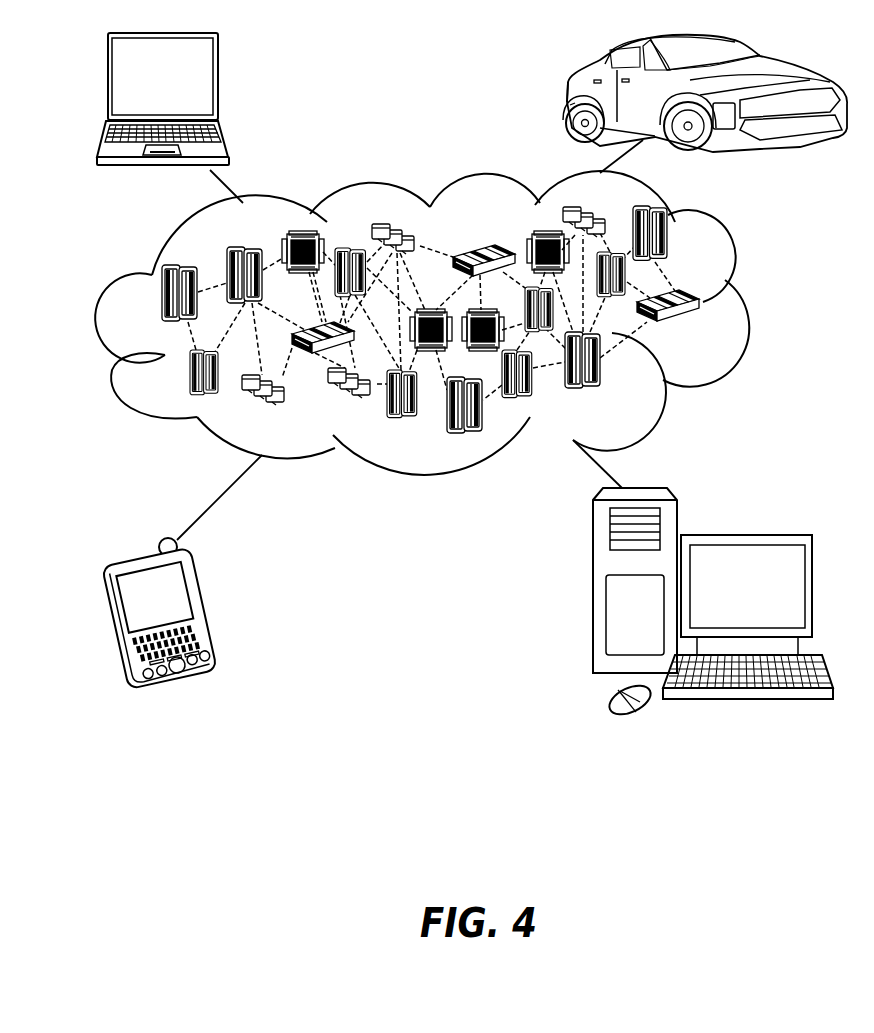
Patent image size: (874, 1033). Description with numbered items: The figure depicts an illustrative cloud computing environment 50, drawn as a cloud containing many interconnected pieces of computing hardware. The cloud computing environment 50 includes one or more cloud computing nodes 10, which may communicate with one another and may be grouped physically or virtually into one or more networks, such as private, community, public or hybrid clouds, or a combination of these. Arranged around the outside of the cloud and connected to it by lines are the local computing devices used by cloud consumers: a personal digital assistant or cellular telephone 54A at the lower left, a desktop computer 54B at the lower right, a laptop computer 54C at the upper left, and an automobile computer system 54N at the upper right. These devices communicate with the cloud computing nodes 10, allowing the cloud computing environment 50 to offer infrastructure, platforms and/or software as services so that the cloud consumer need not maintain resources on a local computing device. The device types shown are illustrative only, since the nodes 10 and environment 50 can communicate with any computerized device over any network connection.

The cloud computing node 10 is at (765, 297).
The cloud computing environment 50 is at (445, 323).
The personal digital assistant or cellular telephone 54A is at (212, 611).
The desktop computer 54B is at (753, 535).
The laptop computer 54C is at (218, 84).
The automobile computer system 54N is at (572, 93).